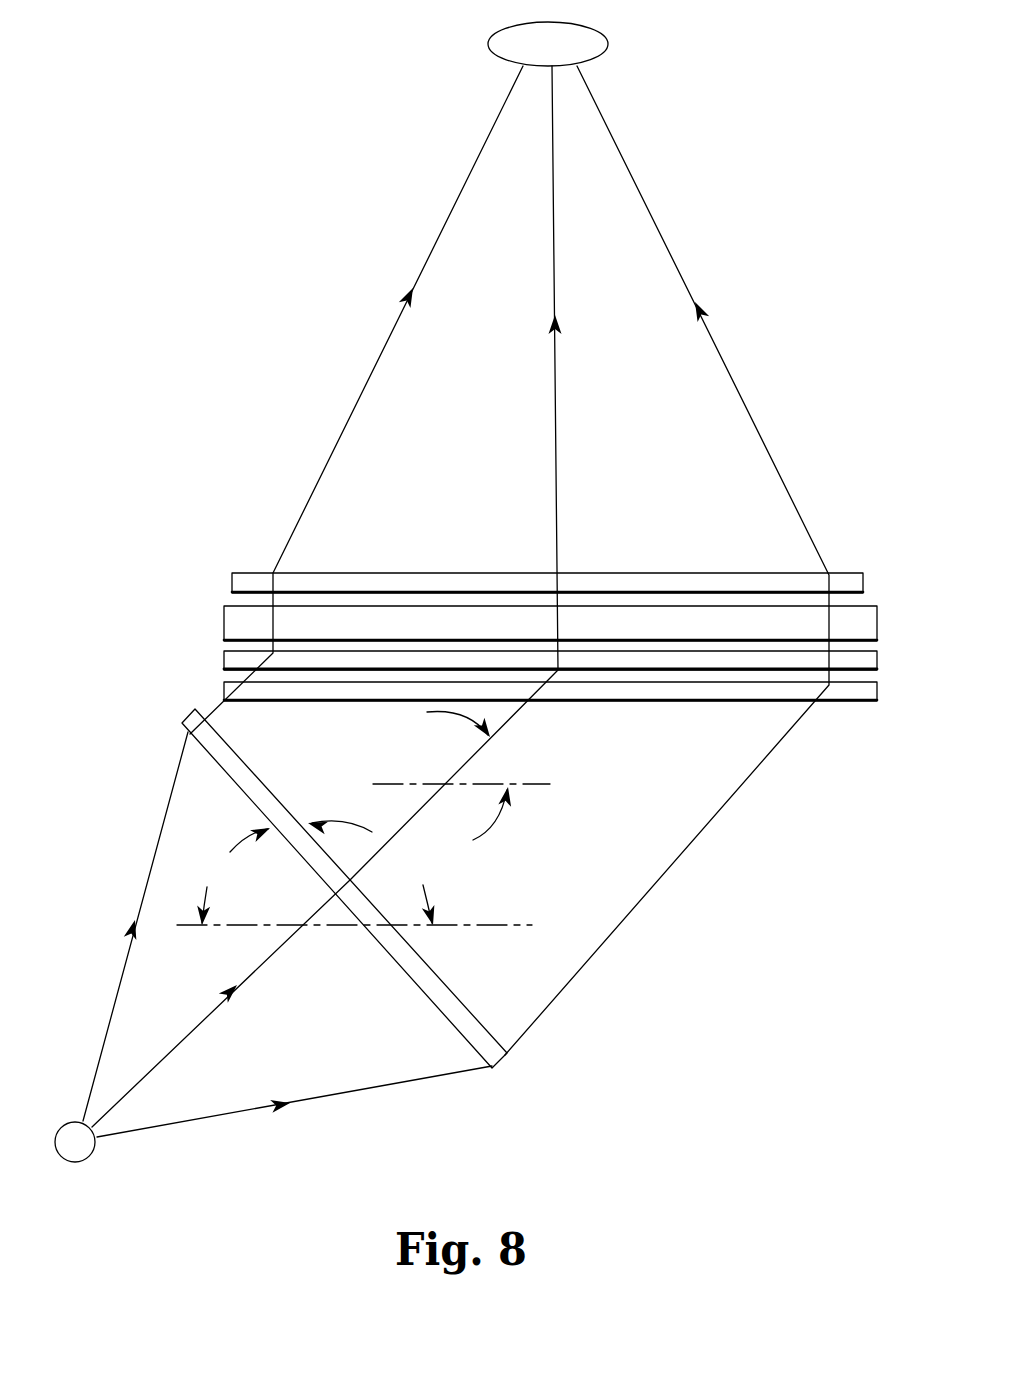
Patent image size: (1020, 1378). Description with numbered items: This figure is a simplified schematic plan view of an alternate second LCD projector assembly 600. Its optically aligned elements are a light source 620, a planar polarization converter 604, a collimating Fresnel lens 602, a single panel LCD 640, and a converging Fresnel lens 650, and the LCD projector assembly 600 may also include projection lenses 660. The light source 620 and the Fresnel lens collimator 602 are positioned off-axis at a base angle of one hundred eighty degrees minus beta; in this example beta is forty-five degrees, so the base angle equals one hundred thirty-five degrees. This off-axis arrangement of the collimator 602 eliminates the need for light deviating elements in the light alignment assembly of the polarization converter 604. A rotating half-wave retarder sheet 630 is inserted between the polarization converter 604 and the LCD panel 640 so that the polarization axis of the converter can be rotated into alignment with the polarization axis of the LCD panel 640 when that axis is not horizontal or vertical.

The LCD projector assembly 600 is at (160, 290).
The projection lenses 660 is at (497, 30).
The converging Fresnel lens 650 is at (232, 583).
The single panel LCD 640 is at (224, 623).
The rotating half-wave retarder sheet 630 is at (224, 660).
The planar polarization converter 604 is at (877, 693).
The collimating Fresnel lens 602 is at (495, 1068).
The light source 620 is at (89, 1156).